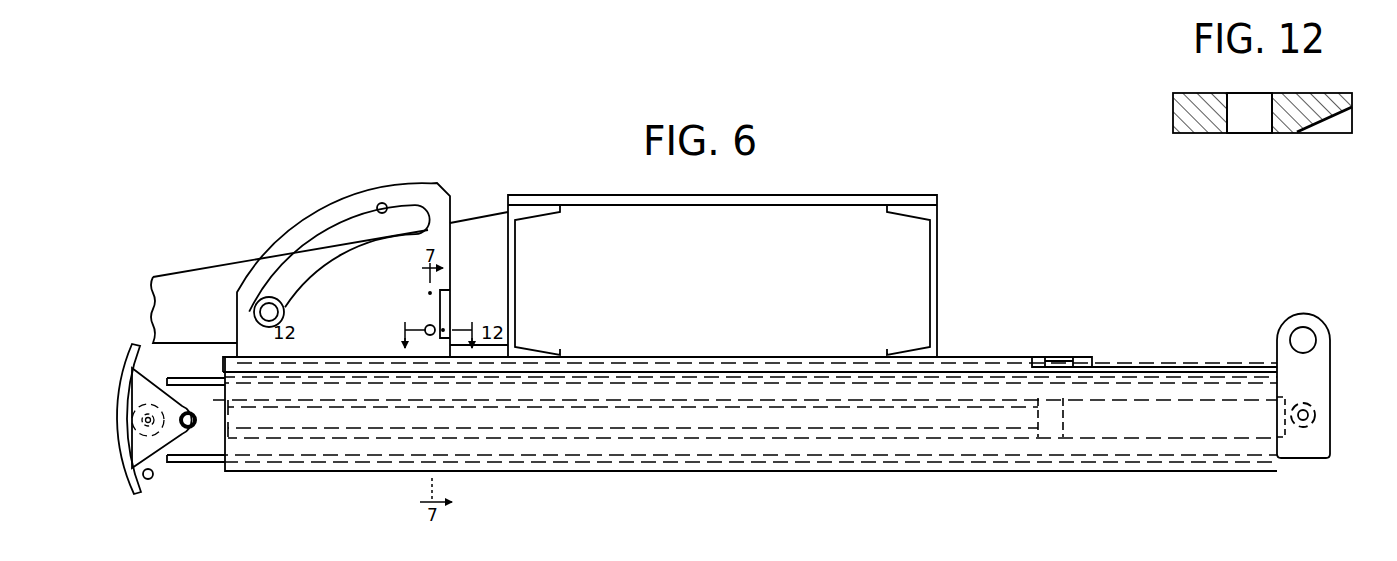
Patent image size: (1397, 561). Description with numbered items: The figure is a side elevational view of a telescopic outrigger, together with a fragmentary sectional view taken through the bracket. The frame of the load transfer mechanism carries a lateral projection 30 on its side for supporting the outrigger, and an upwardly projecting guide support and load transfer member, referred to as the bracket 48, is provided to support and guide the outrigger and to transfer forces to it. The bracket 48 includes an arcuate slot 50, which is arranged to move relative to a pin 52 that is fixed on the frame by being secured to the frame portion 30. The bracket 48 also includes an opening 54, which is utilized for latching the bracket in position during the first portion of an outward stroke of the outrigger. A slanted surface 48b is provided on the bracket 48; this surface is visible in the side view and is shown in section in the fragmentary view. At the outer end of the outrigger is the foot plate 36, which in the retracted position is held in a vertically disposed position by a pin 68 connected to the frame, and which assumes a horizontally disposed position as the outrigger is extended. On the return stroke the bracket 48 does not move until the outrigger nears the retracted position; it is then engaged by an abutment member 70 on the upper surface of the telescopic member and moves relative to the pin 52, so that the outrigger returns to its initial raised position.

In FIG. 6, the lateral projection 30 is at (177, 280).
In FIG. 6, the foot plate 36 is at (122, 385).
In FIG. 6, the bracket 48 is at (318, 202).
In FIG. 12, the bracket 48 is at (1173, 108).
In FIG. 6, the slanted surface 48b is at (447, 303).
In FIG. 12, the slanted surface 48b is at (1330, 133).
In FIG. 6, the slot 50 is at (378, 205).
In FIG. 6, the pin 52 is at (263, 297).
In FIG. 6, the opening 54 is at (425, 328).
In FIG. 12, the opening 54 is at (1247, 125).
In FIG. 6, the pin 68 is at (153, 477).
In FIG. 6, the abutment member 70 is at (230, 355).